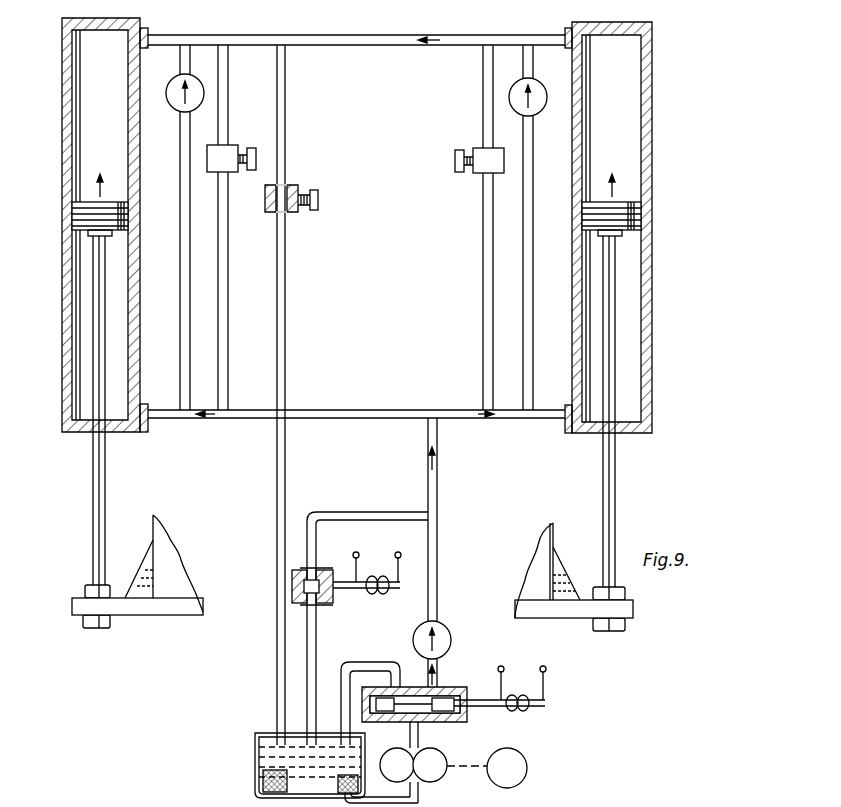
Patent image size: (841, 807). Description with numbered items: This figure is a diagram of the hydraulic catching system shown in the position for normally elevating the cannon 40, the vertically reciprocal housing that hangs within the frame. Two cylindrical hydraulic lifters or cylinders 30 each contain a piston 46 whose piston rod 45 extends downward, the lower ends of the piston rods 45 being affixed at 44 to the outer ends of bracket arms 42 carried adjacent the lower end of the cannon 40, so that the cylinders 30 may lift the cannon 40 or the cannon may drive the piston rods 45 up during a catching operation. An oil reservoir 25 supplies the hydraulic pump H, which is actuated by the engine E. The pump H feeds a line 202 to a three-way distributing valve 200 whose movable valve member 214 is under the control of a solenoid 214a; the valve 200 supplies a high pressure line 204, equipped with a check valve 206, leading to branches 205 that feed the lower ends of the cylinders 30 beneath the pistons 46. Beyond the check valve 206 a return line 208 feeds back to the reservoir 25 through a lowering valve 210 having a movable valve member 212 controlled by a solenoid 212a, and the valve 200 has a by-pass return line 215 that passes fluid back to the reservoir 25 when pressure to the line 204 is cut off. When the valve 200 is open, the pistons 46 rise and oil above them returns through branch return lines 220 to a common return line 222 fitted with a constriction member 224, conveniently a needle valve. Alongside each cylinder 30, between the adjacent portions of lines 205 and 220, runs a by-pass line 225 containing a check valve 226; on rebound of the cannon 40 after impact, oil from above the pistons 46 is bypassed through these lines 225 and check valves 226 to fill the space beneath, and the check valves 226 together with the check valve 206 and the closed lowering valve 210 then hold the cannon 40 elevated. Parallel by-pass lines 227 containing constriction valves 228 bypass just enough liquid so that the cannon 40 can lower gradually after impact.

The hydraulic cylinder 30 is at (62, 150).
The piston 46 is at (85, 210).
The piston rod 45 is at (93, 503).
The affixing point of piston rods 44 is at (86, 593).
The bracket arm 42 is at (125, 605).
The cannon 40 is at (171, 557).
The branch return line 220 is at (357, 36).
The branch line 205 is at (252, 420).
The by-pass line 225 is at (180, 283).
The by-pass line 227 is at (228, 255).
The check valve 226 is at (204, 90).
The constriction valve 228 is at (228, 146).
The common return line 222 is at (287, 140).
The constriction member 224 is at (296, 190).
The high pressure line 204 is at (437, 540).
The check valve 206 is at (446, 626).
The return line 208 is at (333, 512).
The lowering valve 210 is at (320, 570).
The movable valve member 212 is at (292, 584).
The solenoid 212a is at (357, 590).
The by-pass return line 215 is at (372, 652).
The three-way distributing valve 200 is at (452, 686).
The movable valve member 214 is at (458, 712).
The solenoid 214a is at (530, 712).
The supply line 202 is at (410, 735).
The oil reservoir 25 is at (257, 742).
The hydraulic pump H is at (432, 775).
The engine E is at (507, 768).